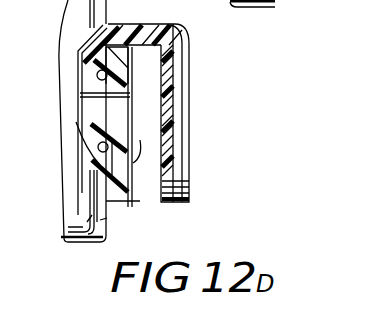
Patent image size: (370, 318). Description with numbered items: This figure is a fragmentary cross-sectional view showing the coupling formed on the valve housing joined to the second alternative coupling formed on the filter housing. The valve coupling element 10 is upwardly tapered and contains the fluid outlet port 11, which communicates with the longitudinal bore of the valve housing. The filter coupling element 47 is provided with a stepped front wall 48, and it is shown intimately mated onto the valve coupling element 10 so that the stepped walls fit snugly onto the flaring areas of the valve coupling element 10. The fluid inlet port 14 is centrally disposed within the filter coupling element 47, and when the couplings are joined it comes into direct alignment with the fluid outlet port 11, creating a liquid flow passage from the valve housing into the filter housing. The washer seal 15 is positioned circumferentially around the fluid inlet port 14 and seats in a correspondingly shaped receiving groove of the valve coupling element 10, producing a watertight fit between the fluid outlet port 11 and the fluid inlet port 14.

The valve coupling element 10 is at (130, 201).
The fluid outlet port 11 is at (148, 118).
The fluid inlet port 14 is at (130, 123).
The washer seal 15 is at (100, 162).
The filter coupling element 47 is at (140, 140).
The stepped front wall 48 is at (150, 85).